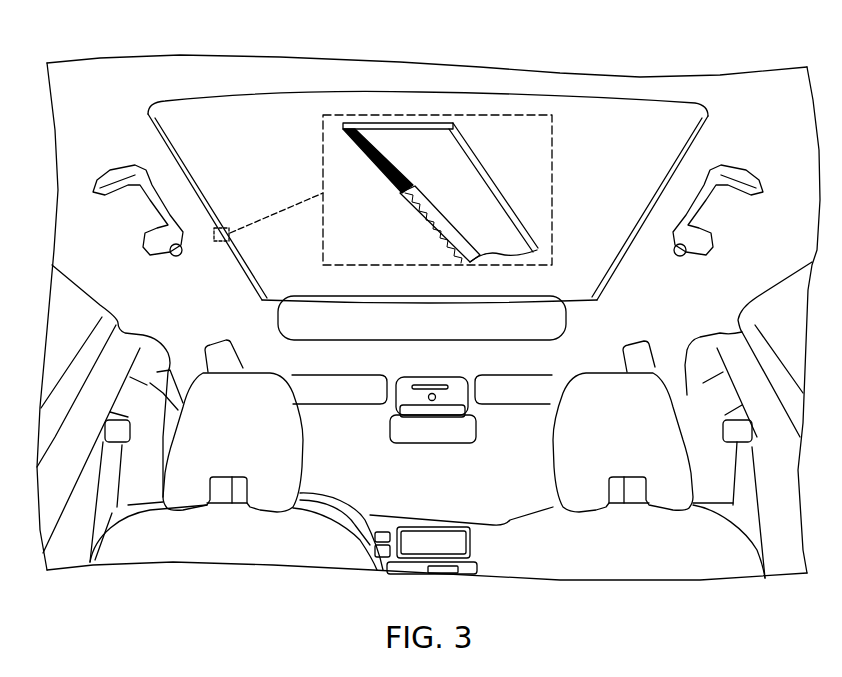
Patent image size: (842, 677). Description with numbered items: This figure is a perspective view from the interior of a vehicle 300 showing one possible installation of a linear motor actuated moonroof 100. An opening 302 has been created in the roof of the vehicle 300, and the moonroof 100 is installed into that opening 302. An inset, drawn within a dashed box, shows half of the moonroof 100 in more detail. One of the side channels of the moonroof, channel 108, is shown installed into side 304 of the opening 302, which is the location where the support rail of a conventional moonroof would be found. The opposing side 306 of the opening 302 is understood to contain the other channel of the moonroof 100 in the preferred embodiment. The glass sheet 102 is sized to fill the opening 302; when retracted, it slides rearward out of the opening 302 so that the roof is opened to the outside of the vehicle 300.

The moonroof 100 is at (540, 167).
The glass sheet 102 is at (198, 108).
The channel 108 is at (415, 200).
The vehicle 300 is at (75, 213).
The opening 302 is at (271, 103).
The side 304 is at (157, 134).
The opposing side 306 is at (683, 152).